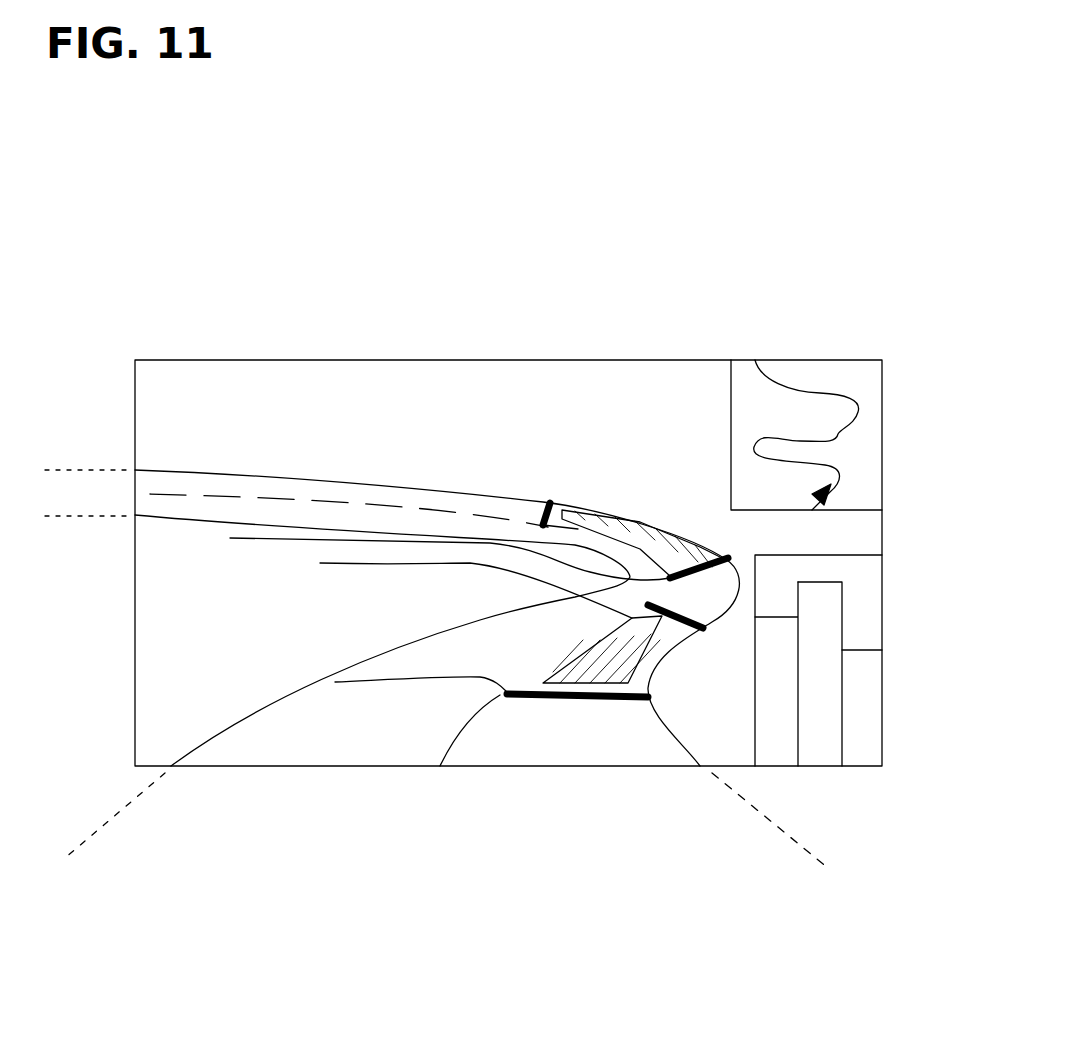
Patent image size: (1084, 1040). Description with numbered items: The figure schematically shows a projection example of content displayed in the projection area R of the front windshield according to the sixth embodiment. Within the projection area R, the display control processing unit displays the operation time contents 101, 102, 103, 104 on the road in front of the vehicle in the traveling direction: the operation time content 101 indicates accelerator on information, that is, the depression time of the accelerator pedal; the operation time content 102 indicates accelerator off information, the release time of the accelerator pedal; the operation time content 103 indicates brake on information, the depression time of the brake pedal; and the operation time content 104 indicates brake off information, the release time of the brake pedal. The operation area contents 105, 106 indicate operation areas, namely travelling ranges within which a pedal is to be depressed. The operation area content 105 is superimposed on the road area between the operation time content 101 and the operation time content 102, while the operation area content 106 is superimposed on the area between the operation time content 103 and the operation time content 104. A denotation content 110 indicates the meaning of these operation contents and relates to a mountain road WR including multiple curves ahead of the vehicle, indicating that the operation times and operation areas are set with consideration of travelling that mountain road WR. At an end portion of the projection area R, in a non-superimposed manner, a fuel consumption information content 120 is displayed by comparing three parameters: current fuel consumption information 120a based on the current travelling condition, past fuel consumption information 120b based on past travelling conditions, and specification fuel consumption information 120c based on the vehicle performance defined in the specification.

The projection area R is at (478, 398).
The mountain road WR is at (838, 434).
The operation time content 101 is at (340, 678).
The operation time content 102 is at (448, 583).
The operation time content 103 is at (421, 551).
The operation time content 104 is at (547, 503).
The operation area content 105 is at (650, 605).
The operation area content 106 is at (638, 521).
The denotation content 110 is at (848, 372).
The fuel consumption information content 120 is at (822, 560).
The current fuel consumption information 120a is at (775, 748).
The past fuel consumption information 120b is at (819, 748).
The specification fuel consumption information 120c is at (865, 748).